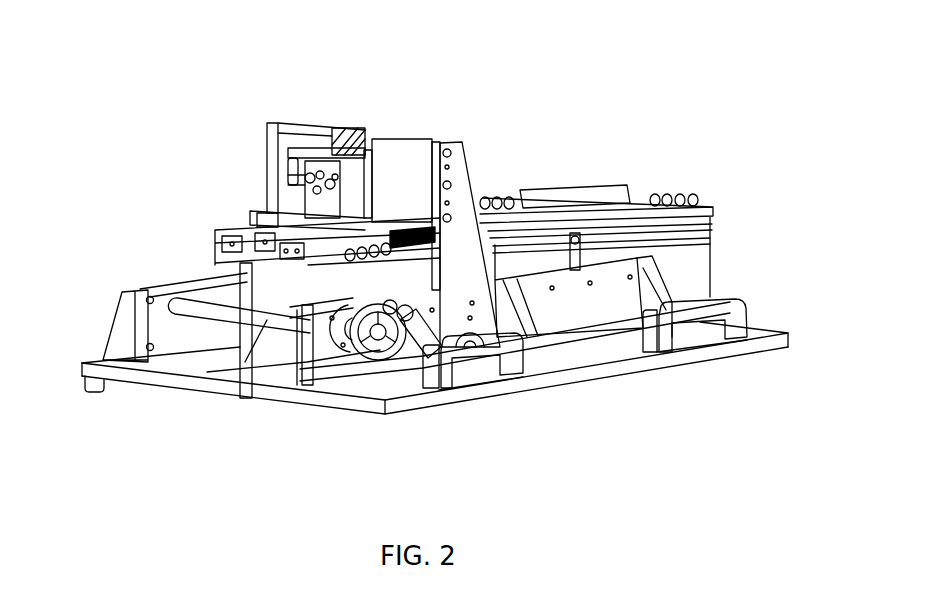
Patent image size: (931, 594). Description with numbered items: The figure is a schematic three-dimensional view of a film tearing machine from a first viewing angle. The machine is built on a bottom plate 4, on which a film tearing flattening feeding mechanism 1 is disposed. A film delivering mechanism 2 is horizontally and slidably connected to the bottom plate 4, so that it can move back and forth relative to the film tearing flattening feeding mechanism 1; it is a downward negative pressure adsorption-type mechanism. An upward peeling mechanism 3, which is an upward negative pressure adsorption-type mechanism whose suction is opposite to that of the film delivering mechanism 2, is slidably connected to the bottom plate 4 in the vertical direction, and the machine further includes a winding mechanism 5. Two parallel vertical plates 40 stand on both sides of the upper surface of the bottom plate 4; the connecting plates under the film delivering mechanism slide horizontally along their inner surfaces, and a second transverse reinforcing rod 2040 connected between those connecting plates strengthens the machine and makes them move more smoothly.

The film tearing flattening feeding mechanism 1 is at (640, 208).
The film delivering mechanism 2 is at (222, 246).
The upward peeling mechanism 3 is at (315, 165).
The bottom plate 4 is at (611, 378).
The winding mechanism 5 is at (241, 400).
The vertical plate 40 is at (157, 318).
The second transverse reinforcing rod 2040 is at (477, 347).